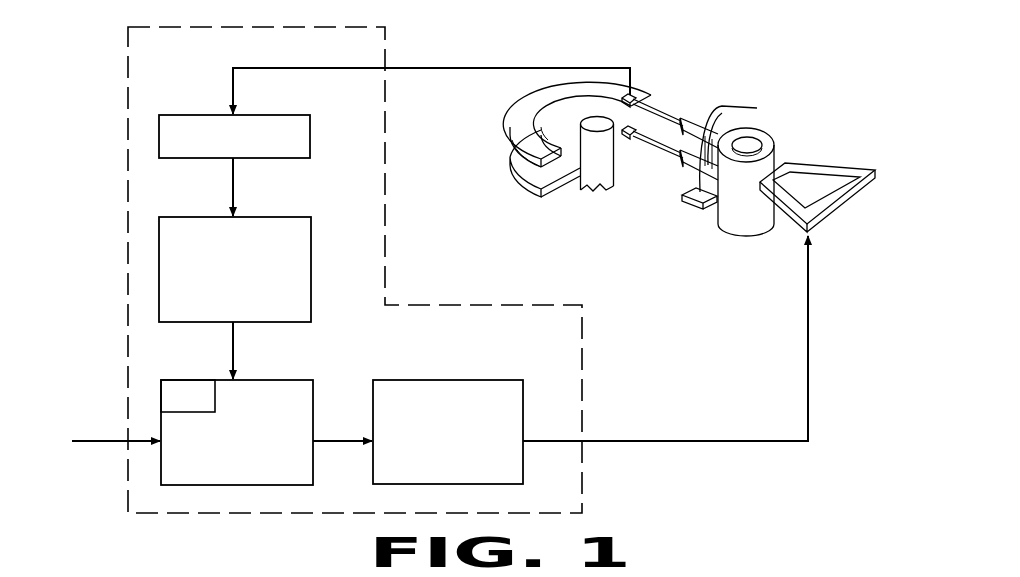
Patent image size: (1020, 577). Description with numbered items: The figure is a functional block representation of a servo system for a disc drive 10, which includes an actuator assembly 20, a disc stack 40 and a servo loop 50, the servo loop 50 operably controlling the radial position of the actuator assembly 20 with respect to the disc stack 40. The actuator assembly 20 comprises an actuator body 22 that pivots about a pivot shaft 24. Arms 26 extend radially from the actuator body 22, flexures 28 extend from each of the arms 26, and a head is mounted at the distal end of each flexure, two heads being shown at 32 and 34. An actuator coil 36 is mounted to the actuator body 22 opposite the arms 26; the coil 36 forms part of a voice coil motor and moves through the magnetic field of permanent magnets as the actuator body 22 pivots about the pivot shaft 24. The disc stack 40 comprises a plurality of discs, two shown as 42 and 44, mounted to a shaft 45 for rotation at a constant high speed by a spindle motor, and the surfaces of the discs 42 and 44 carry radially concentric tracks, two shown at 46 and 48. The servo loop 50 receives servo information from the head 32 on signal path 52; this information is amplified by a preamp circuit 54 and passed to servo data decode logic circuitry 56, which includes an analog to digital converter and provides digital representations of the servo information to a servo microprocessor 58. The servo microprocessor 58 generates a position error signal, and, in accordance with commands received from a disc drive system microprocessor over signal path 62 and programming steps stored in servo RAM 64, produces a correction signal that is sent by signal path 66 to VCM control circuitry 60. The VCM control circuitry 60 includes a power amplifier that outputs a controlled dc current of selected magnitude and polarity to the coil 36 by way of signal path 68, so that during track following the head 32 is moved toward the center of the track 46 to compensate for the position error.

The disc drive 10 is at (107, 52).
The actuator assembly 20 is at (751, 179).
The actuator body 22 is at (772, 153).
The pivot shaft 24 is at (750, 142).
The arms 26 is at (757, 108).
The flexures 28 is at (667, 120).
The head 32 is at (652, 93).
The head 34 is at (668, 112).
The actuator coil 36 is at (836, 218).
The disc stack 40 is at (549, 148).
The disc 42 is at (518, 107).
The disc 44 is at (537, 193).
The shaft 45 is at (600, 137).
The track 46 is at (562, 102).
The track 48 is at (542, 177).
The servo loop 50 is at (387, 267).
The signal path 52 is at (265, 68).
The preamp circuit 54 is at (213, 113).
The servo data decode logic circuitry 56 is at (263, 215).
The servo microprocessor 58 is at (258, 380).
The VCM control circuitry 60 is at (435, 380).
The signal path 62 is at (122, 436).
The servo RAM 64 is at (186, 380).
The signal path 66 is at (330, 437).
The signal path 68 is at (603, 441).